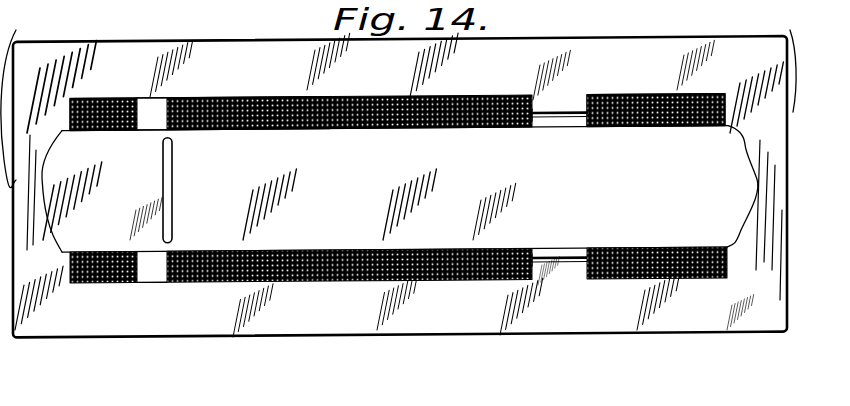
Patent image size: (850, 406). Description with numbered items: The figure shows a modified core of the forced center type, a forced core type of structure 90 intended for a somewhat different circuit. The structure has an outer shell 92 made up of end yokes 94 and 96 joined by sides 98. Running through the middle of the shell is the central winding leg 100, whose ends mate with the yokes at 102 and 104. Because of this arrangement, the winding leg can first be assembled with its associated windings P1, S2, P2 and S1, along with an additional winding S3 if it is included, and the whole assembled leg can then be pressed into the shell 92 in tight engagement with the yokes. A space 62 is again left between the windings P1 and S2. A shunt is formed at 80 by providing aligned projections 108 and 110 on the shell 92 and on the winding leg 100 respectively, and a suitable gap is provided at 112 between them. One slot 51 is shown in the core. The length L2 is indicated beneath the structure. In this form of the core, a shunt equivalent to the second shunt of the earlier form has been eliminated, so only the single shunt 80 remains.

The shunt 80 is at (580, 305).
The end yoke 94 is at (21, 100).
The end yoke 96 is at (769, 60).
The central winding leg 100 is at (378, 195).
The mating end of winding leg 102 is at (43, 192).
The mating end of winding leg 104 is at (757, 183).
The slot 51 is at (173, 205).
The forced core type of structure 90 is at (176, 41).
The sides 98 is at (300, 53).
The outer shell 92 is at (568, 28).
The winding P1 is at (90, 98).
The winding P2 is at (368, 283).
The winding S1 is at (630, 95).
The winding S2 is at (217, 98).
The additional winding S3 is at (462, 283).
The projection 108 is at (566, 113).
The projection 110 is at (576, 121).
The gap 112 is at (550, 118).
The space 62 is at (157, 275).
The length dimension L2 is at (373, 395).